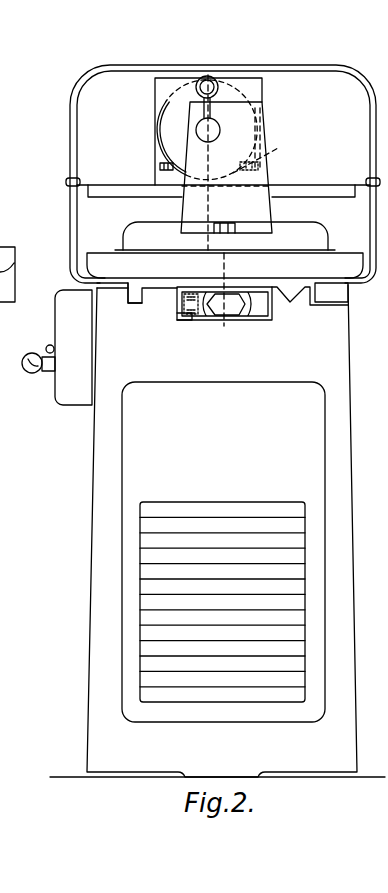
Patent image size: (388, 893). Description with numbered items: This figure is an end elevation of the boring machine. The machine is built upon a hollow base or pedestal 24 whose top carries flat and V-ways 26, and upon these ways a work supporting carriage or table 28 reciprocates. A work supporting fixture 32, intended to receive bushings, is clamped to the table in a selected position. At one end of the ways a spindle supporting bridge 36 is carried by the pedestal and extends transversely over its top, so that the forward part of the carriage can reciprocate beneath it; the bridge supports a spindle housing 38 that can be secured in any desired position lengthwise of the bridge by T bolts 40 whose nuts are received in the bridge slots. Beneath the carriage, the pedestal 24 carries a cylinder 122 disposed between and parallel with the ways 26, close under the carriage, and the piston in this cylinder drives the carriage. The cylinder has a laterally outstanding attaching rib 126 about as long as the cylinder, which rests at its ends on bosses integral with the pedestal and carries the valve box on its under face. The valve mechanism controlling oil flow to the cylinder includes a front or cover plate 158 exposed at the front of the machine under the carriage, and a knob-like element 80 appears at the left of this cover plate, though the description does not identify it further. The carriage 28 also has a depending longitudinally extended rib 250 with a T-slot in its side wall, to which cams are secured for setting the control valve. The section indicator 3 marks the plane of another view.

The section line 3- 3 is at (208, 73).
The hollow base or pedestal 24 is at (92, 556).
The flat and V-ways 26 is at (162, 292).
The work supporting carriage or table 28 is at (138, 262).
The work supporting fixture 32 is at (266, 177).
The spindle supporting bridge 36 is at (77, 213).
The spindle housing 38 is at (157, 107).
The T bolts 40 is at (160, 166).
The control knob 80 is at (22, 364).
The cylinder 122 is at (242, 318).
The laterally outstanding attaching rib 126 is at (192, 318).
The front or cover plate 158 is at (57, 320).
The depending longitudinally extended rib 250 is at (145, 283).